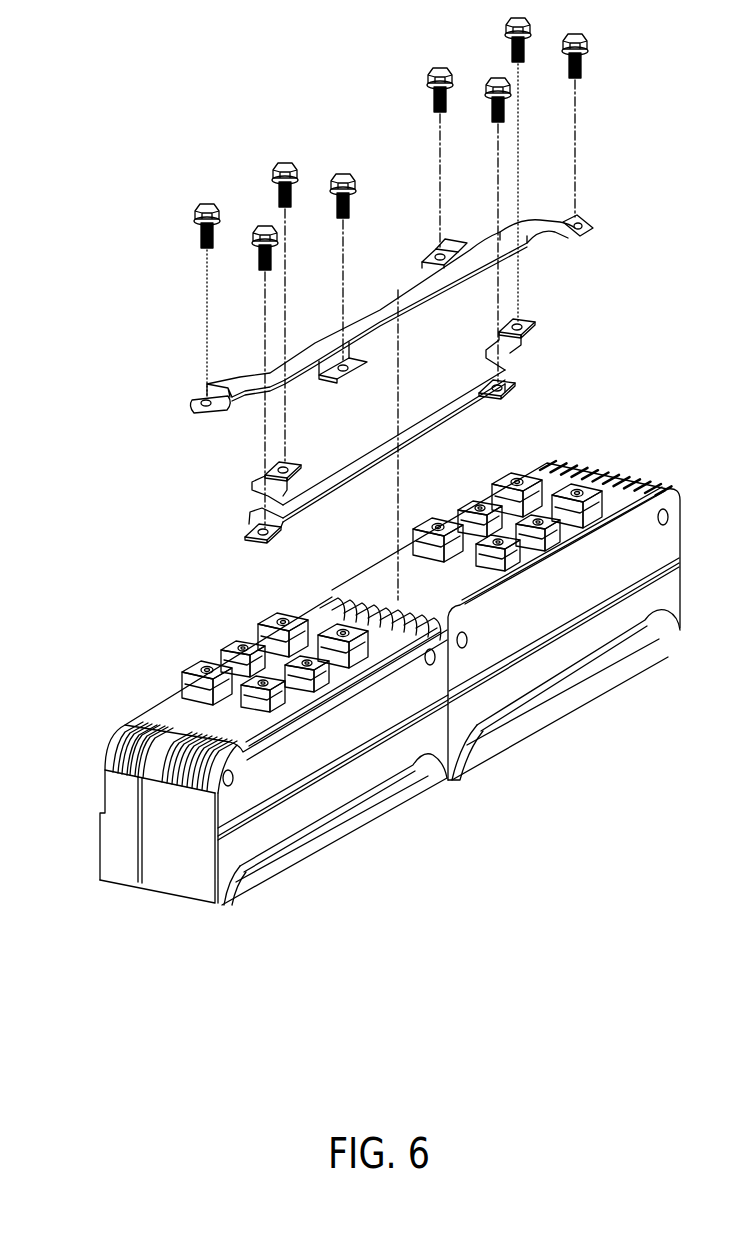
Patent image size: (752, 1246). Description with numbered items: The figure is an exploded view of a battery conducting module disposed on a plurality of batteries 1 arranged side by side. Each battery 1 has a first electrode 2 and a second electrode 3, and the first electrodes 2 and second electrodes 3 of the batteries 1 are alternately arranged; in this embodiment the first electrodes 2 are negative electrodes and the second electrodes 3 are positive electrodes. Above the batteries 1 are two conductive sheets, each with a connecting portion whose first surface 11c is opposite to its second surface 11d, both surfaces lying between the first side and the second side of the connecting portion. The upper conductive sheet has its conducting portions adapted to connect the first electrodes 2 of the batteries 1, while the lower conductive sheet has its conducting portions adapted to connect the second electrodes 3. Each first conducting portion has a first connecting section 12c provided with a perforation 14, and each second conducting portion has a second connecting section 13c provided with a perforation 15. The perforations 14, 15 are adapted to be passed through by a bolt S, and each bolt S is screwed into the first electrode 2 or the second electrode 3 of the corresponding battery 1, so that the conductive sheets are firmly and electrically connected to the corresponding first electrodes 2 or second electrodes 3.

The battery 1 is at (113, 722).
The first electrode 2 is at (193, 663).
The second electrode 3 is at (250, 683).
The bolt S is at (198, 200).
The first surface 11c is at (397, 298).
The second surface 11d is at (447, 402).
The first connecting section 12c is at (188, 404).
The second connecting section 13c is at (594, 230).
The perforation 14 is at (195, 390).
The perforation 15 is at (590, 226).